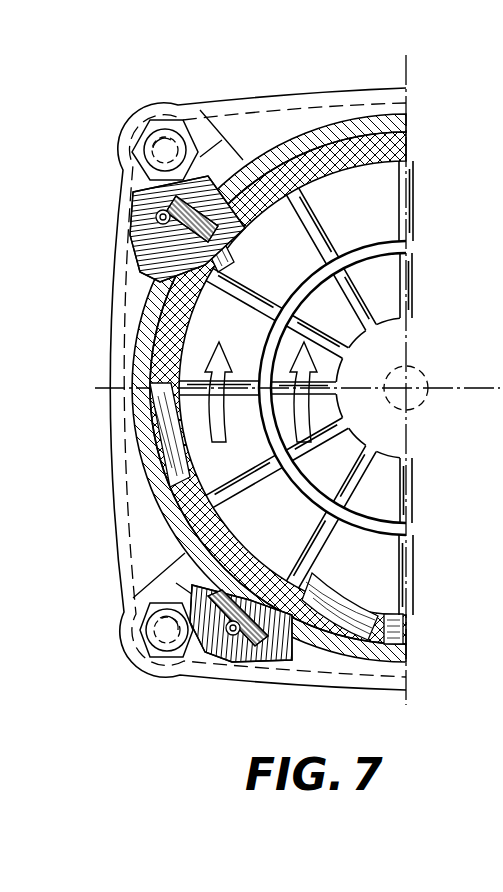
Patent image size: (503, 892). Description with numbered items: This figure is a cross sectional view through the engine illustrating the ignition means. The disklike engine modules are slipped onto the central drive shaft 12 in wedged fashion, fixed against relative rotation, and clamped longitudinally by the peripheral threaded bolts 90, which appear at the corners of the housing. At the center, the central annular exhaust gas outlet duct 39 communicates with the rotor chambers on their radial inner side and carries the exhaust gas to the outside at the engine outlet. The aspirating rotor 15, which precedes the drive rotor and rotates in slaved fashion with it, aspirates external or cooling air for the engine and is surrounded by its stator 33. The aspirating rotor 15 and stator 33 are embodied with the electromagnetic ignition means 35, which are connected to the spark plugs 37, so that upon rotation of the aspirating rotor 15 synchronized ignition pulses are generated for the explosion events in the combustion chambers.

The central drive shaft 12 is at (404, 384).
The aspirating rotor 15 is at (378, 214).
The stator 33 is at (400, 130).
The electromagnetic ignition means 35 is at (262, 190).
The spark plugs 37 is at (138, 200).
The central annular exhaust gas outlet duct 39 is at (385, 298).
The peripheral threaded bolts 90 is at (165, 152).